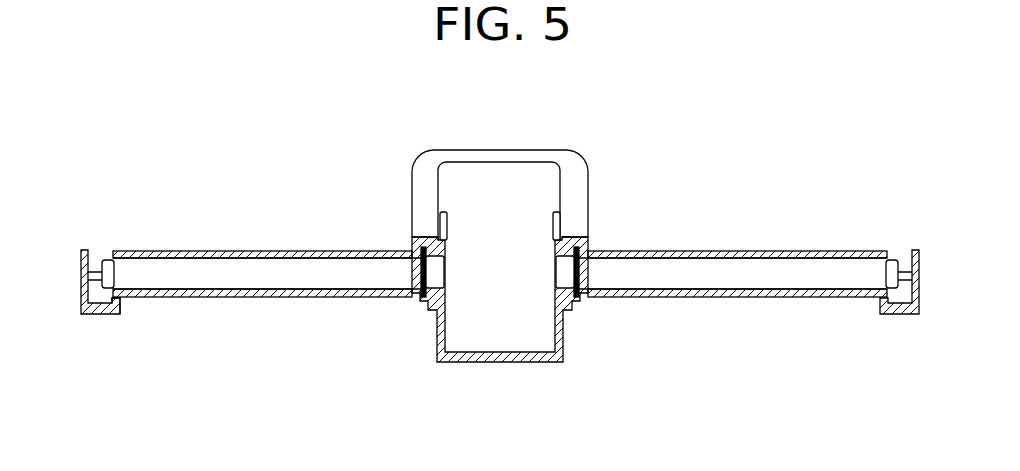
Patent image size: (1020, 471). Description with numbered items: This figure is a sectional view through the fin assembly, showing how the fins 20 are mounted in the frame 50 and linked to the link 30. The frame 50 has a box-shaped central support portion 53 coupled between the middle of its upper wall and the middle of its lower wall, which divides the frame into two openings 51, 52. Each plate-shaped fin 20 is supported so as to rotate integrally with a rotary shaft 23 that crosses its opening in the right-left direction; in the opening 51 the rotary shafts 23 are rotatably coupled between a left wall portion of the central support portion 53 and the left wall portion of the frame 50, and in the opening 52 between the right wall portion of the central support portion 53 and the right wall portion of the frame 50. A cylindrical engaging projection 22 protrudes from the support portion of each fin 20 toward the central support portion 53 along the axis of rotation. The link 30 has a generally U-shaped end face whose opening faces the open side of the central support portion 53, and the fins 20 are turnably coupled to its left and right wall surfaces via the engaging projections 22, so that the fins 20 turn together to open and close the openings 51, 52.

The fin 20 is at (280, 298).
The engaging projection 22 is at (553, 222).
The rotary shaft 23 is at (358, 278).
The link 30 is at (528, 150).
The frame 50 is at (93, 314).
The opening 51 is at (882, 314).
The opening 52 is at (120, 305).
The central support portion 53 is at (515, 363).